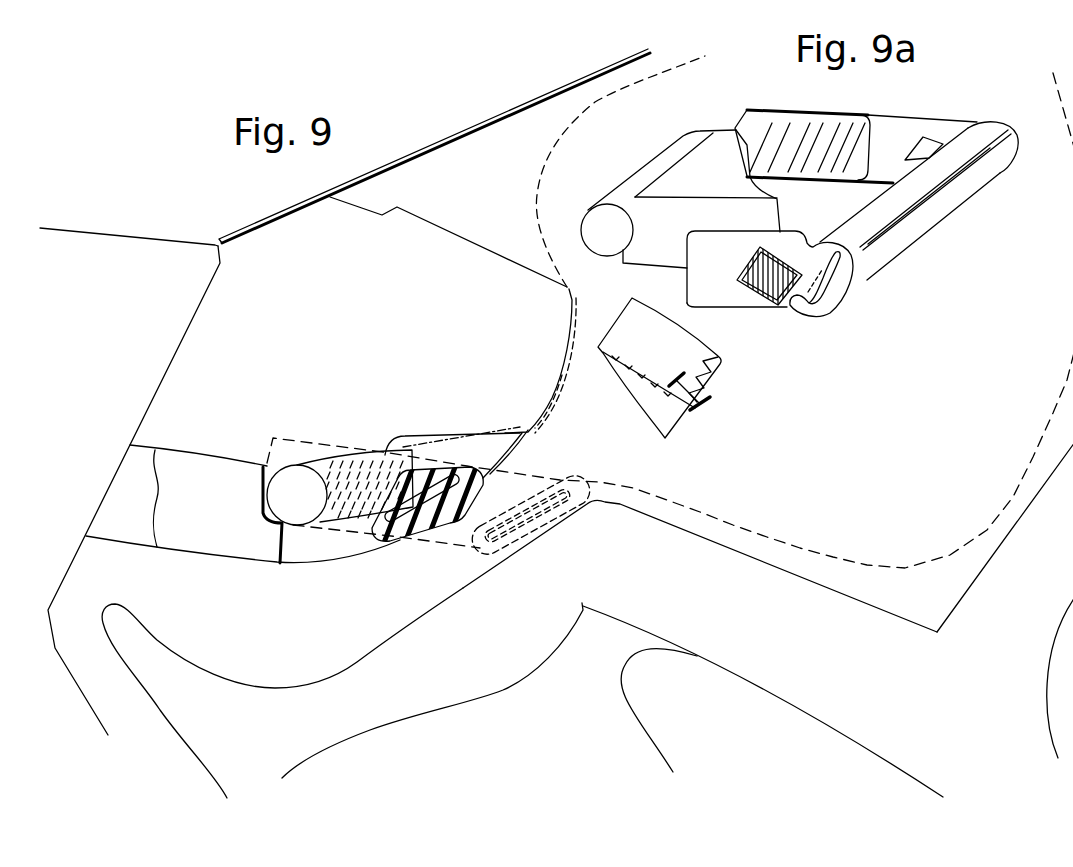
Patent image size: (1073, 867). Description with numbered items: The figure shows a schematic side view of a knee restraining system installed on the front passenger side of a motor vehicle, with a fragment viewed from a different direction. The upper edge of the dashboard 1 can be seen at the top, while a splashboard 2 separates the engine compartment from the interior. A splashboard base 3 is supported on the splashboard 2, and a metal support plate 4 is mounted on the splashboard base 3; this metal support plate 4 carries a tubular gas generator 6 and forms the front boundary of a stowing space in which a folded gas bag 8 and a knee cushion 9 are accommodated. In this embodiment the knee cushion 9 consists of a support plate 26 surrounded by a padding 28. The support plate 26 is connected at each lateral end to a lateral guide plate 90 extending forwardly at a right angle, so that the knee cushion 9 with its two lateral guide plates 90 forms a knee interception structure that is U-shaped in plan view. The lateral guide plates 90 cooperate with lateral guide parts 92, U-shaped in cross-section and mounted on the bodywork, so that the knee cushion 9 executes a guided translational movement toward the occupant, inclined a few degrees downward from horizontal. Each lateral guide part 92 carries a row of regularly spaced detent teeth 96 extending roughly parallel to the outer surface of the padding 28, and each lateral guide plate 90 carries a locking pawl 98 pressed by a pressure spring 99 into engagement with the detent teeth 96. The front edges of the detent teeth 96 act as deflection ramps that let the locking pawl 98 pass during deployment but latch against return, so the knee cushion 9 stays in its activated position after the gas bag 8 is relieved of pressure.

In FIG. 9, the upper edge of the dashboard 1 is at (570, 290).
In FIG. 9, the splashboard 2 is at (167, 371).
In FIG. 9, the splashboard base 3 is at (243, 504).
In FIG. 9, the metal support plate 4 is at (283, 543).
In FIG. 9, the tubular gas generator 6 is at (273, 497).
In FIG. 9a, the tubular gas generator 6 is at (648, 172).
In FIG. 9, the folded gas bag 8 is at (536, 200).
In FIG. 9a, the folded gas bag 8 is at (713, 143).
In FIG. 9, the knee cushion 9 is at (467, 468).
In FIG. 9, the support plate 26 is at (417, 533).
In FIG. 9a, the support plate 26 is at (833, 308).
In FIG. 9, the padding 28 is at (433, 527).
In FIG. 9a, the padding 28 is at (922, 227).
In FIG. 9a, the lateral guide plate 90 is at (903, 118).
In FIG. 9, the lateral guide part 92 is at (300, 438).
In FIG. 9a, the lateral guide part 92 is at (772, 108).
In FIG. 9a, the detent teeth 96 is at (802, 130).
In FIG. 9a, the locking pawl 98 is at (770, 305).
In FIG. 9a, the pressure spring 99 is at (719, 358).